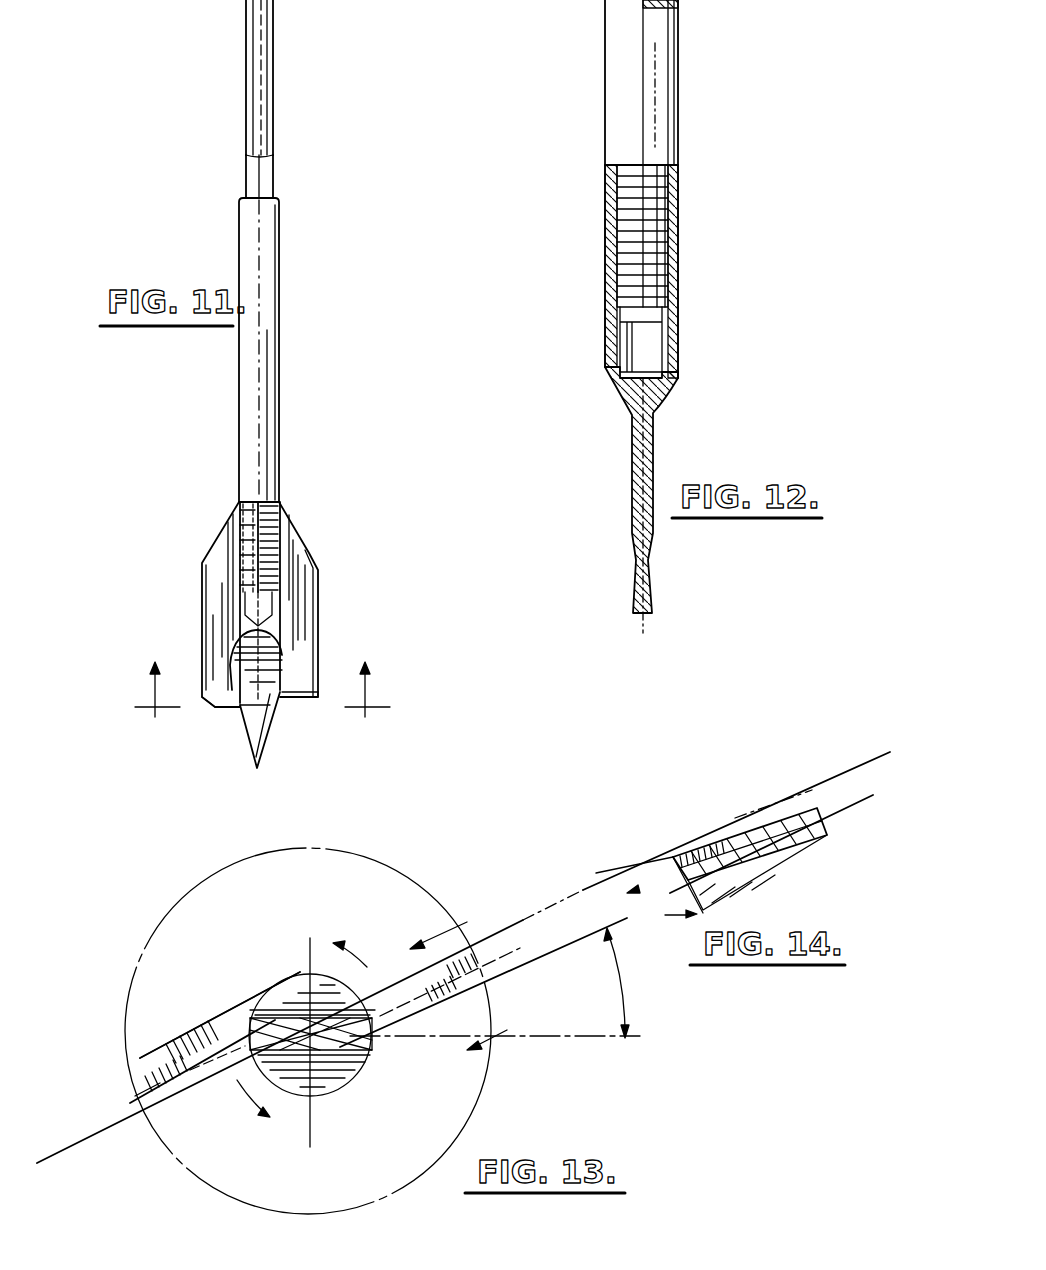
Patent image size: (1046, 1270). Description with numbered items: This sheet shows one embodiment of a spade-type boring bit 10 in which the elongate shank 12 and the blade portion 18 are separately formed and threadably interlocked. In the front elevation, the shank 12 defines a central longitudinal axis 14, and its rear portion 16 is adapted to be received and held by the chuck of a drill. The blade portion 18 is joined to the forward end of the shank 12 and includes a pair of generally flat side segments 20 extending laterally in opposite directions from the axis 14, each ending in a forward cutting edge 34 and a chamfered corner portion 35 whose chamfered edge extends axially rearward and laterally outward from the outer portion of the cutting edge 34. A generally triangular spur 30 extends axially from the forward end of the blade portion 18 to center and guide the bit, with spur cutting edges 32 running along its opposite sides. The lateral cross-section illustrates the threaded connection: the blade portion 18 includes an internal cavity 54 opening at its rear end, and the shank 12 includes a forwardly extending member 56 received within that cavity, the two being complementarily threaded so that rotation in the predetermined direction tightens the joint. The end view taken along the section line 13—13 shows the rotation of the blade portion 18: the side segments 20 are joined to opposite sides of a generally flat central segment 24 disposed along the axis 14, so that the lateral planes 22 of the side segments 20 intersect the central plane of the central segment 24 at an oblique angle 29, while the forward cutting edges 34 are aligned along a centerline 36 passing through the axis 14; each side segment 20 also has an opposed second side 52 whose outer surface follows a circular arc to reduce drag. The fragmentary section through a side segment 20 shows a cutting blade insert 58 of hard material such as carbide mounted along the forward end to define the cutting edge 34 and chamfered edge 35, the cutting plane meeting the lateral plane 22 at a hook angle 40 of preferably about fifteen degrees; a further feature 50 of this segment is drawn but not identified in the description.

In FIG. 11, the spade-type boring bit 10 is at (318, 246).
In FIG. 11, the elongate shank 12 is at (279, 302).
In FIG. 12, the elongate shank 12 is at (678, 107).
In FIG. 11, the section line 13— 13 is at (261, 710).
In FIG. 11, the central longitudinal axis 14 is at (262, 185).
In FIG. 12, the central longitudinal axis 14 is at (643, 57).
In FIG. 13, the central longitudinal axis 14 is at (495, 973).
In FIG. 11, the rear portion 16 is at (273, 53).
In FIG. 11, the blade portion 18 is at (185, 608).
In FIG. 12, the blade portion 18 is at (625, 489).
In FIG. 13, the blade portion 18 is at (150, 1038).
In FIG. 11, the side segments 20 is at (215, 562).
In FIG. 13, the side segments 20 is at (183, 1040).
In FIG. 14, the side segments 20 is at (800, 808).
In FIG. 13, the lateral planes 22 is at (591, 940).
In FIG. 14, the lateral planes 22 is at (843, 810).
In FIG. 13, the central segment 24 is at (287, 1003).
In FIG. 13, the oblique angle 29 is at (620, 995).
In FIG. 11, the spur 30 is at (258, 722).
In FIG. 13, the spur 30 is at (325, 1090).
In FIG. 11, the spur cutting edges 32 is at (262, 762).
In FIG. 13, the spur cutting edges 32 is at (247, 1040).
In FIG. 11, the forward cutting edge 34 is at (300, 703).
In FIG. 13, the forward cutting edge 34 is at (198, 1088).
In FIG. 14, the forward cutting edge 34 is at (673, 857).
In FIG. 11, the chamfered corner portion 35 is at (198, 700).
In FIG. 13, the chamfered corner portion 35 is at (148, 1075).
In FIG. 13, the centerline 36 is at (118, 1132).
In FIG. 14, the centerline 36 is at (857, 768).
In FIG. 14, the hook angle 40 is at (617, 860).
In FIG. 14, the slot 50 is at (723, 893).
In FIG. 13, the second side 52 is at (142, 1095).
In FIG. 11, the internal cavity 54 is at (245, 500).
In FIG. 12, the internal cavity 54 is at (655, 263).
In FIG. 11, the forwardly extending member 56 is at (272, 543).
In FIG. 12, the forwardly extending member 56 is at (625, 217).
In FIG. 13, the cutting blade inserts 58 is at (147, 1105).
In FIG. 14, the cutting blade inserts 58 is at (718, 852).